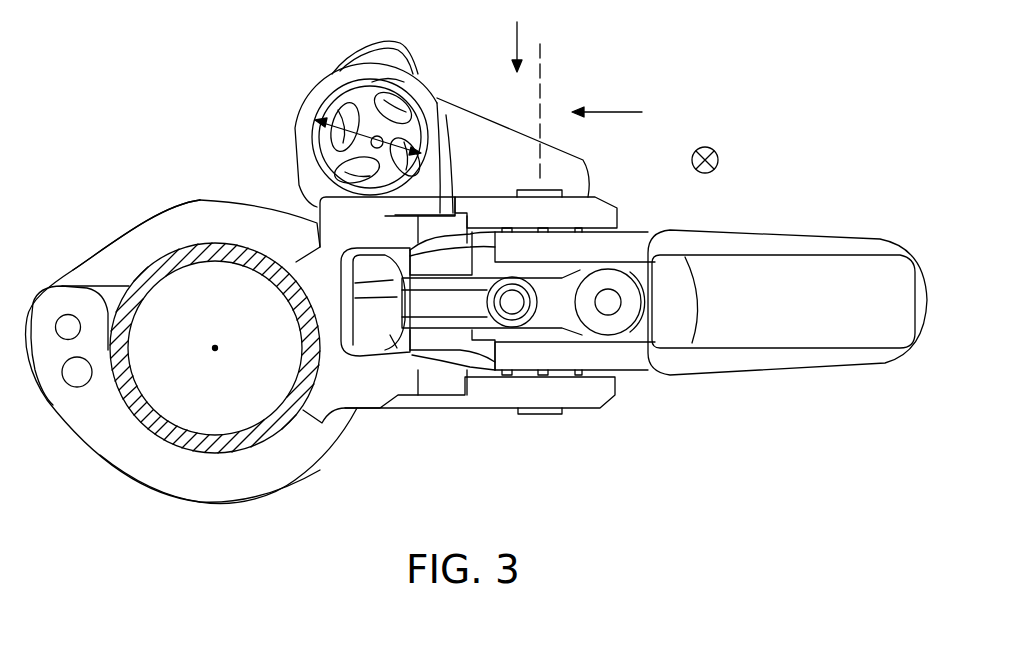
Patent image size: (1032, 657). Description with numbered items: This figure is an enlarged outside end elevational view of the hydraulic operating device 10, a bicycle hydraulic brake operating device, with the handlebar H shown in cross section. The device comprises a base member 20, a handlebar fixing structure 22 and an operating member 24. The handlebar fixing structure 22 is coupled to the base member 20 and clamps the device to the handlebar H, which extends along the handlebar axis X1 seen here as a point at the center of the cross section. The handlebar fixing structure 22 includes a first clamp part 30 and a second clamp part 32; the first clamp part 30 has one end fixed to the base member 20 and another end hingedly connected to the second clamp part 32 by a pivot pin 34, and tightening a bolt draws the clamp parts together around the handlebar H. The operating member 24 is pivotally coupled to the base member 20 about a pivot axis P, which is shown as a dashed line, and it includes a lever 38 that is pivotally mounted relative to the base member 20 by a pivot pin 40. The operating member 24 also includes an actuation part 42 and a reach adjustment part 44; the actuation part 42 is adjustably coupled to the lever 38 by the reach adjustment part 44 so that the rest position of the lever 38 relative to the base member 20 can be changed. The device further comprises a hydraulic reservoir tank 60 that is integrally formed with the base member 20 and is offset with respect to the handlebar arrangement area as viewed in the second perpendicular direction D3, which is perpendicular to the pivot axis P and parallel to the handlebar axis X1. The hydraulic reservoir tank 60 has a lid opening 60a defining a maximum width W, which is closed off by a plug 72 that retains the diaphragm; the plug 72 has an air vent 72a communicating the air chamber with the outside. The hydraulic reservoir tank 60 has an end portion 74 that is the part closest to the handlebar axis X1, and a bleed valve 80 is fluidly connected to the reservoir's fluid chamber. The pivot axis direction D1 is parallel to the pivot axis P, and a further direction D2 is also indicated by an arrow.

The hydraulic operating device 10 is at (750, 43).
The base member 20 is at (420, 414).
The handlebar fixing structure 22 is at (186, 508).
The operating member 24 is at (698, 395).
The first clamp part 30 is at (280, 460).
The second clamp part 32 is at (143, 241).
The pivot pin 34 is at (70, 387).
The lever 38 is at (806, 232).
The pivot pin 40 is at (556, 186).
The actuation part 42 is at (445, 332).
The reach adjustment part 44 is at (629, 350).
The hydraulic reservoir tank 60 is at (472, 110).
The lid opening 60a is at (386, 82).
The plug 72 is at (340, 102).
The air vent 72a is at (376, 149).
The end portion 74 is at (297, 177).
The bleed valve 80 is at (350, 41).
The handlebar H is at (152, 430).
The handlebar axis X1 is at (216, 346).
The maximum width W is at (316, 147).
The pivot axis P is at (540, 68).
The pivot axis direction D1 is at (517, 32).
The second direction D2 is at (613, 112).
The second perpendicular direction D3 is at (718, 155).